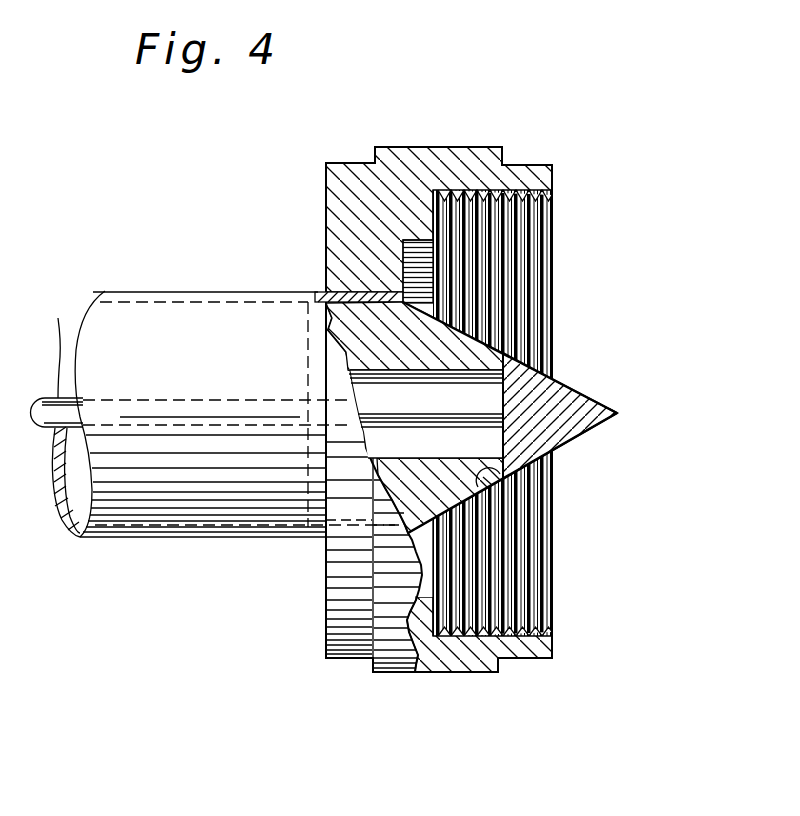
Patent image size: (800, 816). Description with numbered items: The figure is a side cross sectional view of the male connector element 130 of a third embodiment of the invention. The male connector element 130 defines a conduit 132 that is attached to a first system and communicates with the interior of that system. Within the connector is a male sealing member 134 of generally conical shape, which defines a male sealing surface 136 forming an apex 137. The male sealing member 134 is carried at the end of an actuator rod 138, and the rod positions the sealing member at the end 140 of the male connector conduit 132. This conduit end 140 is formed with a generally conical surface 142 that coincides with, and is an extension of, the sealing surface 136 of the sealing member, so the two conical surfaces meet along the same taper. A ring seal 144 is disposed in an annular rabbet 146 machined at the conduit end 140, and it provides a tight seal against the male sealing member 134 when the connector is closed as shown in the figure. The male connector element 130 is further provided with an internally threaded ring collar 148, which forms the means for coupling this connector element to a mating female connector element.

The male connector element 130 is at (288, 200).
The conduit 132 is at (110, 290).
The male sealing member 134 is at (562, 388).
The male sealing surface 136 is at (580, 437).
The apex 137 is at (617, 413).
The actuator rod 138 is at (56, 404).
The end of the male connector conduit 140 is at (460, 357).
The conical surface 142 is at (460, 330).
The ring seal 144 is at (492, 485).
The annular rabbet 146 is at (483, 477).
The internally threaded ring collar 148 is at (470, 668).